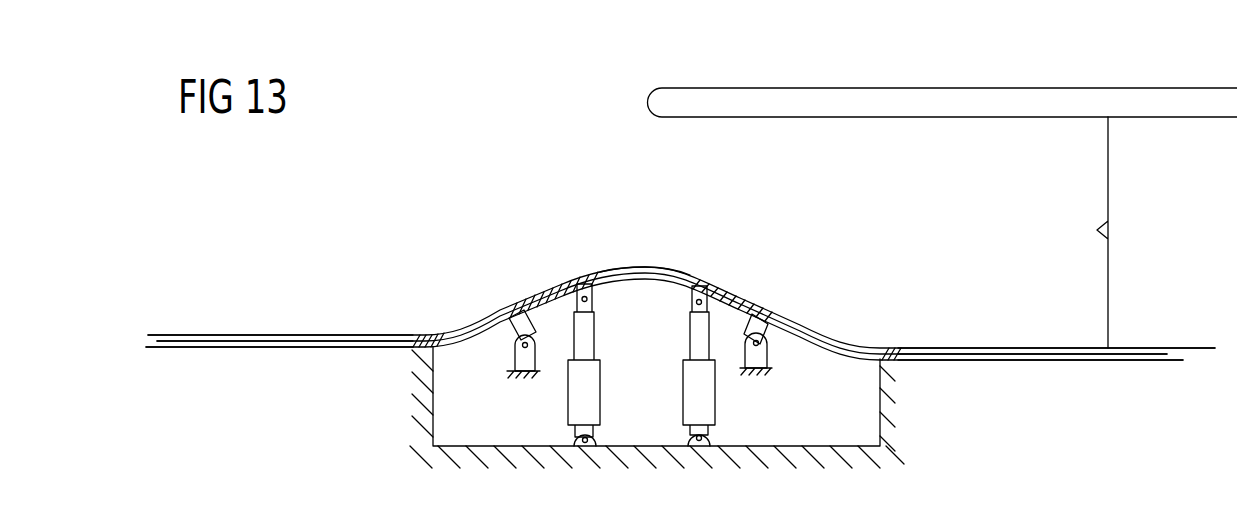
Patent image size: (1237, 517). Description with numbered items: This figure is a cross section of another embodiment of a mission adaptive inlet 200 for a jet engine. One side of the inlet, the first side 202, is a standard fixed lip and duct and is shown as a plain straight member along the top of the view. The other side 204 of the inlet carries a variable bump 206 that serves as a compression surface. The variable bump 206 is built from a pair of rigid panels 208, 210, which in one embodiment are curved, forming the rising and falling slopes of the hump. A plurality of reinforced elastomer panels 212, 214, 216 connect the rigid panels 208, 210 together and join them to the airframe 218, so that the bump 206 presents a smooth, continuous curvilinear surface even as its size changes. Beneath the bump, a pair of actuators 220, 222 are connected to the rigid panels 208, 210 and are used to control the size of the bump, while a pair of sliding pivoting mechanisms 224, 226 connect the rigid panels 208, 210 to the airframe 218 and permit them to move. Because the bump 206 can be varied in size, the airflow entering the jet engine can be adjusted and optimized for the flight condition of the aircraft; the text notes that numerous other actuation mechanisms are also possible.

The mission adaptive inlet 200 is at (775, 69).
The first side 202 is at (858, 98).
The other side 204 is at (406, 421).
The variable bump 206 is at (733, 275).
The rigid panel 208 is at (542, 293).
The rigid panel 210 is at (750, 300).
The elastomer panel 212 is at (455, 328).
The elastomer panel 214 is at (631, 267).
The elastomer panel 216 is at (837, 333).
The airframe 218 is at (335, 349).
The actuator 220 is at (568, 393).
The actuator 222 is at (683, 362).
The sliding pivoting mechanism 224 is at (517, 348).
The sliding pivoting mechanism 226 is at (767, 353).